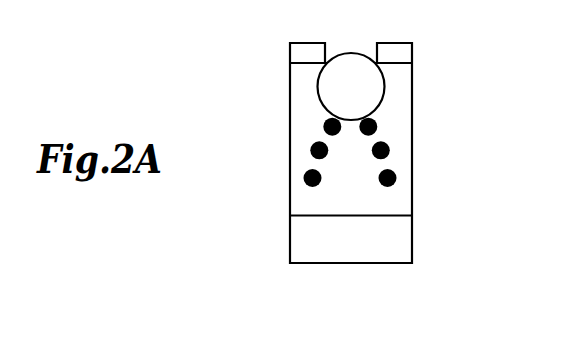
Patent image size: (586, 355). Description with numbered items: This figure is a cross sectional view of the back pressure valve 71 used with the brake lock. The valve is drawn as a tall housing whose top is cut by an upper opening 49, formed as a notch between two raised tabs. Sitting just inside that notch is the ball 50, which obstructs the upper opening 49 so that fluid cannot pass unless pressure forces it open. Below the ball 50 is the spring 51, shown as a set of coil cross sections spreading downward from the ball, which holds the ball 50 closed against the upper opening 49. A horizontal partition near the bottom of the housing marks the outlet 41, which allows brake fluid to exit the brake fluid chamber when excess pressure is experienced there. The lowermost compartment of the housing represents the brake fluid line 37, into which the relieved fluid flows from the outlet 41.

The back pressure valve 71 is at (289, 92).
The upper opening 49 is at (334, 47).
The ball 50 is at (366, 80).
The spring 51 is at (389, 154).
The outlet 41 is at (322, 214).
The brake fluid line 37 is at (303, 232).